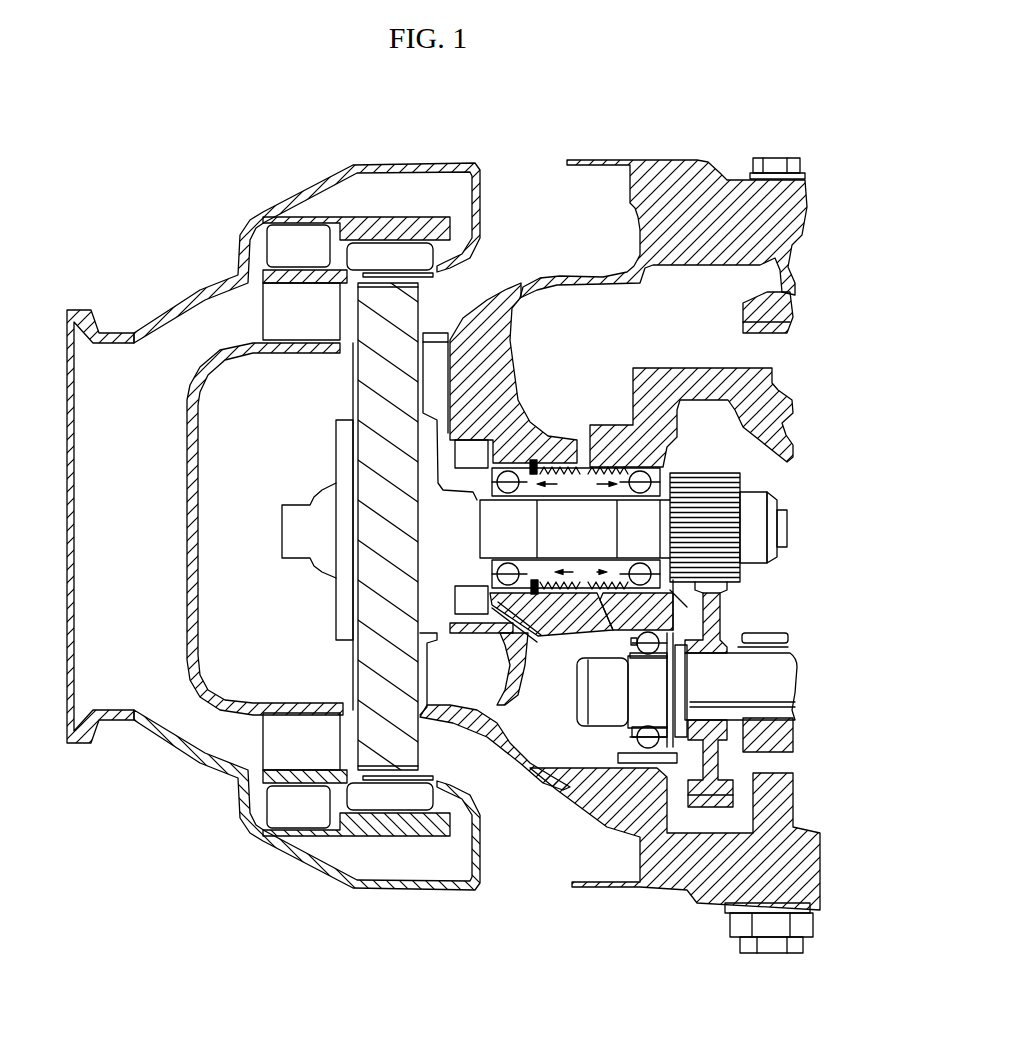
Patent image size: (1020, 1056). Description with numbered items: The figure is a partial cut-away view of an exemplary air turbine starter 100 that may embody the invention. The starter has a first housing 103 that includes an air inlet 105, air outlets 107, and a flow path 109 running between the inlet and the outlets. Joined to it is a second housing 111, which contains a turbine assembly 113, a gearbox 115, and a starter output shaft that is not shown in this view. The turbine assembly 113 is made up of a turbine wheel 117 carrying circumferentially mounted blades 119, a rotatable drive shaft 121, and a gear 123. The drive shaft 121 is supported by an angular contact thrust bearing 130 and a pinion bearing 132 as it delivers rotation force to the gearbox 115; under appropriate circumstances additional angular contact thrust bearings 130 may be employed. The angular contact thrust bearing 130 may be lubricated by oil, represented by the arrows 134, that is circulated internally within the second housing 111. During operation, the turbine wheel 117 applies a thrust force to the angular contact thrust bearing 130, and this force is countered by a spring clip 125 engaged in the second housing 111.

The air turbine starter 100 is at (216, 150).
The first housing 103 is at (200, 287).
The air inlet 105 is at (140, 532).
The air outlets 107 is at (478, 157).
The flow path 109 is at (318, 323).
The second housing 111 is at (612, 277).
The turbine assembly 113 is at (296, 468).
The gearbox 115 is at (778, 609).
The turbine wheel 117 is at (333, 613).
The blades 119 is at (420, 752).
The drive shaft 121 is at (282, 531).
The gear 123 is at (745, 487).
The spring clip 125 is at (555, 558).
The angular contact thrust bearing 130 is at (530, 462).
The pinion bearing 132 is at (653, 478).
The arrows 134 is at (584, 465).